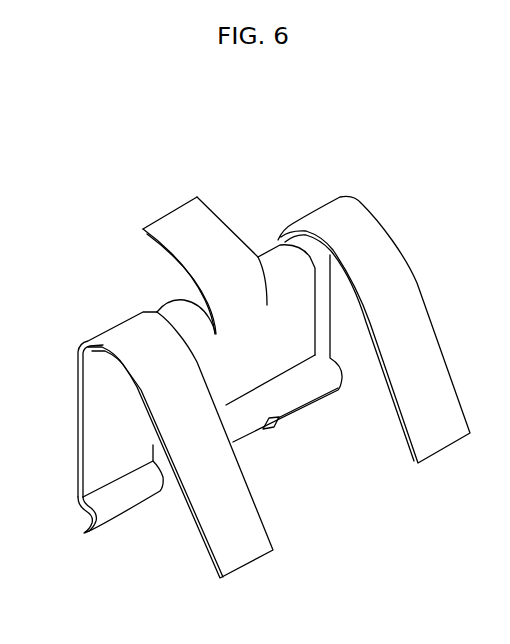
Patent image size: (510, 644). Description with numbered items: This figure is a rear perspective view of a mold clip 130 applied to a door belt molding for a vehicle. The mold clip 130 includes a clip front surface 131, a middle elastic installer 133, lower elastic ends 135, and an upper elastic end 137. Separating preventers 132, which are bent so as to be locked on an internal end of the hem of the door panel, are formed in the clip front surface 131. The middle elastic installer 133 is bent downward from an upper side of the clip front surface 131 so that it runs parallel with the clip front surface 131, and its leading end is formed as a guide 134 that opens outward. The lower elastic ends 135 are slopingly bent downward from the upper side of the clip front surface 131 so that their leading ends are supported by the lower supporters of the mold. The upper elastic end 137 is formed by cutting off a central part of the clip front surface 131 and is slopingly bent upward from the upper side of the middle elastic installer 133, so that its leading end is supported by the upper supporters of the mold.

The mold clip 130 is at (300, 152).
The clip front surface 131 is at (80, 410).
The separating preventer 132 is at (88, 520).
The middle elastic installer 133 is at (255, 340).
The guide 134 is at (247, 420).
The lower elastic end 135 is at (443, 443).
The upper elastic end 137 is at (176, 210).